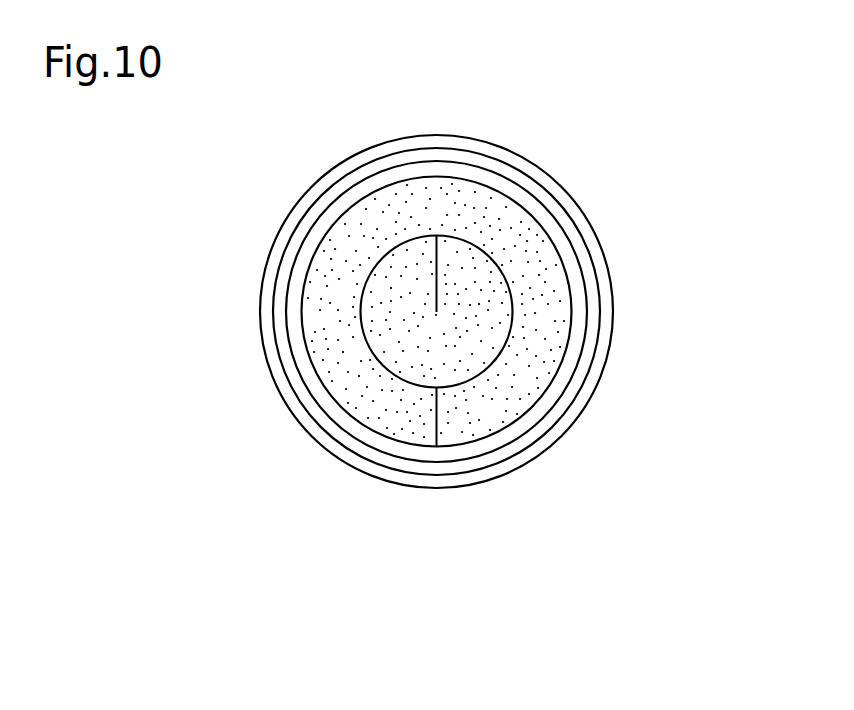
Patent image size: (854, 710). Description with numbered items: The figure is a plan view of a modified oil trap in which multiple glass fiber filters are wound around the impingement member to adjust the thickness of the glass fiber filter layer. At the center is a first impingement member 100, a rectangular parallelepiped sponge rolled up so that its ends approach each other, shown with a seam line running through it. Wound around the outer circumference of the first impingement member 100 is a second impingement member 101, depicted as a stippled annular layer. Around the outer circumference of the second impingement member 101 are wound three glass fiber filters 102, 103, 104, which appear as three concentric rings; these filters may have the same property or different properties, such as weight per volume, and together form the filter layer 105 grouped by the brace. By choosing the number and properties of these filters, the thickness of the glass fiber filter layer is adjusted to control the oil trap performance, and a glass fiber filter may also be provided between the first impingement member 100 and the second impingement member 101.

The first impingement member 100 is at (483, 360).
The second impingement member 101 is at (475, 435).
The glass fiber filter 102 is at (577, 282).
The glass fiber filter 103 is at (582, 253).
The glass fiber filter 104 is at (592, 232).
The sheath 105 is at (507, 311).